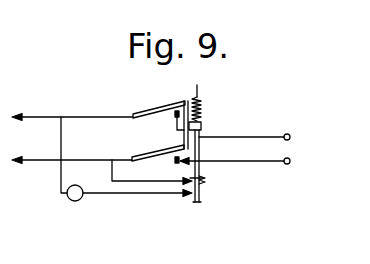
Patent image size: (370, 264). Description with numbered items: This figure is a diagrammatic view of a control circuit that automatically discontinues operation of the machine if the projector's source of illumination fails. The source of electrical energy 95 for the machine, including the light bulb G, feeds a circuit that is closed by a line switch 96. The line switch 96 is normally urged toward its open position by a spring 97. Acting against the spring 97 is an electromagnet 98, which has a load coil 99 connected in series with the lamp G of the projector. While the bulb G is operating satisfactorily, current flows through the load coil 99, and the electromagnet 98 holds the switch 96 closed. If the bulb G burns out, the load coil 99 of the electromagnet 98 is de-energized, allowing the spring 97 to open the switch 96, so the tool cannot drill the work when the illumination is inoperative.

The source of electrical energy 95 is at (237, 160).
The line switch 96 is at (162, 105).
The spring 97 is at (201, 110).
The electromagnet 98 is at (206, 183).
The load coil 99 is at (201, 195).
The light bulb G is at (75, 201).